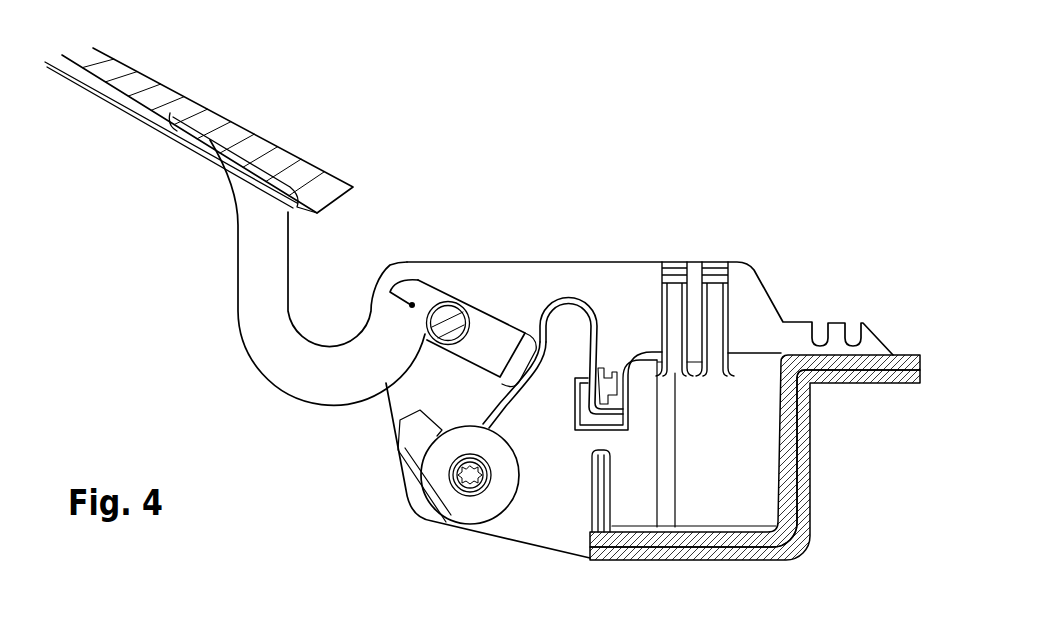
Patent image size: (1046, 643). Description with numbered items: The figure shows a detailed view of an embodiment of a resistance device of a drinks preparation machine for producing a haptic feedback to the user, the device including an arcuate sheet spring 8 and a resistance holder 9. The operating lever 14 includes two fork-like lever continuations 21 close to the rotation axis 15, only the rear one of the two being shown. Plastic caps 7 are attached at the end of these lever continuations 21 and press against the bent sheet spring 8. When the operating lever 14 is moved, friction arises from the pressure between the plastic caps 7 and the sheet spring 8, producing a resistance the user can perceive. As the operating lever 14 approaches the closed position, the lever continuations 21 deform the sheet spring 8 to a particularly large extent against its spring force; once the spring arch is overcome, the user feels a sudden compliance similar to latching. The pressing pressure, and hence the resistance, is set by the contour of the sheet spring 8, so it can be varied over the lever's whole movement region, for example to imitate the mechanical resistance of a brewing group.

The operating lever 14 is at (170, 106).
The plastic cap 7 is at (525, 352).
The lever continuation 21 is at (483, 350).
The rotation axis 15 is at (412, 302).
The sheet spring 8 is at (582, 305).
The resistance holder 9 is at (673, 310).